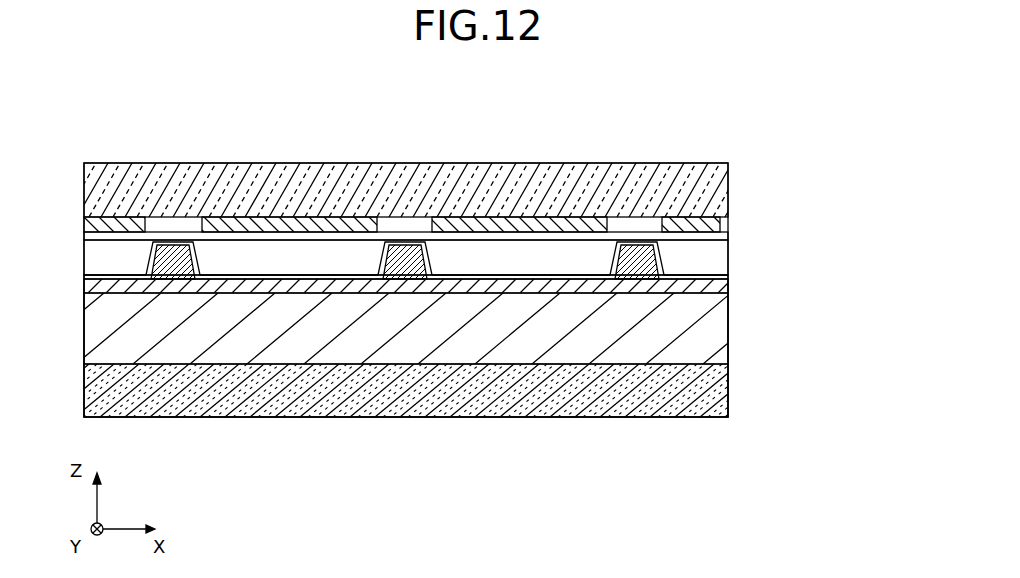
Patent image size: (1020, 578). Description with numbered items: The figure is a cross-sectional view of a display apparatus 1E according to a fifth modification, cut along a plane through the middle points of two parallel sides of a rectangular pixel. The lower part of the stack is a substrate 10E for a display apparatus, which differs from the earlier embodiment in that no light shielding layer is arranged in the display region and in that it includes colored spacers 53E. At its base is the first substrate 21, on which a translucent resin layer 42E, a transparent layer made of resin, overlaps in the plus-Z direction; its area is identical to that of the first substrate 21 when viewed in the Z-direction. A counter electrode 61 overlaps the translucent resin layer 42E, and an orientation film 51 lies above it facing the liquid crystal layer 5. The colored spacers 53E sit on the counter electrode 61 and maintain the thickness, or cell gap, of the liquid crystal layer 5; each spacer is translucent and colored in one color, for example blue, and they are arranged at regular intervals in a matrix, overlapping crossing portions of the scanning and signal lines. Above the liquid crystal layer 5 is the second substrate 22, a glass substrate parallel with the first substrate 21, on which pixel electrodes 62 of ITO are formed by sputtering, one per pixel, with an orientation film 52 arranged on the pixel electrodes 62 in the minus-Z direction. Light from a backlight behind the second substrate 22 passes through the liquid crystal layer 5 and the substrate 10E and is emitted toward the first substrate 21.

The display apparatus 1E is at (713, 135).
The second substrate 22 is at (728, 192).
The pixel electrode 62 is at (281, 217).
The colored spacer 53E is at (172, 243).
The orientation film 52 is at (728, 237).
The liquid crystal layer 5 is at (728, 260).
The orientation film 51 is at (728, 277).
The counter electrode 61 is at (728, 288).
The translucent resin layer 42E is at (728, 335).
The first substrate 21 is at (728, 395).
The substrate for a display apparatus 10E is at (818, 262).